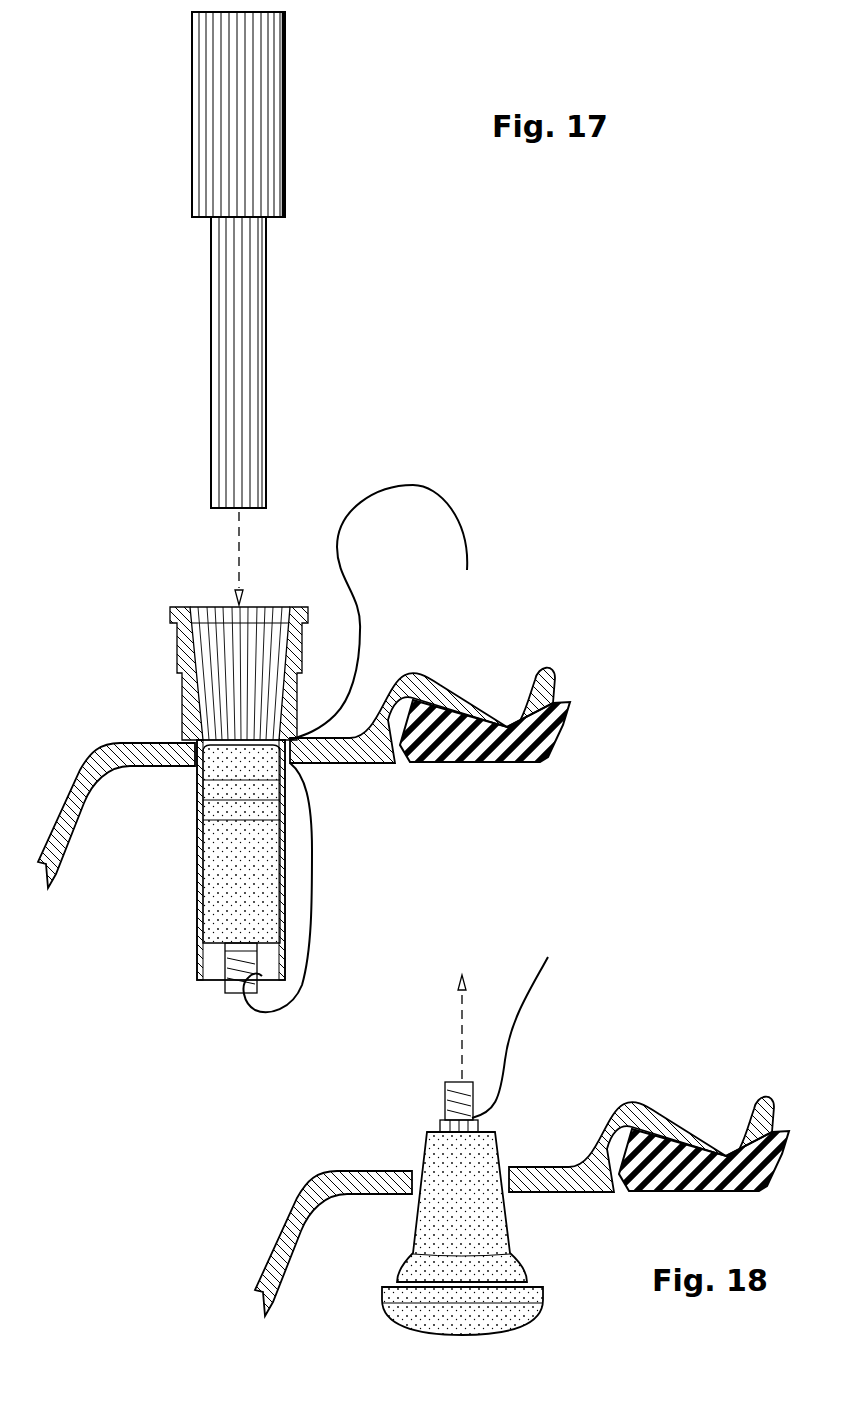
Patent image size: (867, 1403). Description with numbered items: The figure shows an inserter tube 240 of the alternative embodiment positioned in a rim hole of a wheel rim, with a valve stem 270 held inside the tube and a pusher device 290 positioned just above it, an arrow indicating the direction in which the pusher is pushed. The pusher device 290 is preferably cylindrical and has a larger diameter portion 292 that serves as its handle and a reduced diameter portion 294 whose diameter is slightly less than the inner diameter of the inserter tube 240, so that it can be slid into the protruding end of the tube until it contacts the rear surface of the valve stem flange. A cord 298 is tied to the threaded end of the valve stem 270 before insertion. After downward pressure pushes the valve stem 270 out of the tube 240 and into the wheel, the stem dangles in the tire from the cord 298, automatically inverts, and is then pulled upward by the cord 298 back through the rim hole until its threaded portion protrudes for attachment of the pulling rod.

In FIG. 17, the inserter tube 240 is at (205, 697).
In FIG. 17, the valve stem 270 is at (230, 888).
In FIG. 18, the valve stem 270 is at (458, 1194).
In FIG. 17, the pusher device 290 is at (296, 237).
In FIG. 17, the larger diameter portion 292 is at (278, 63).
In FIG. 17, the reduced diameter portion 294 is at (266, 410).
In FIG. 17, the cord 298 is at (471, 520).
In FIG. 18, the cord 298 is at (548, 957).